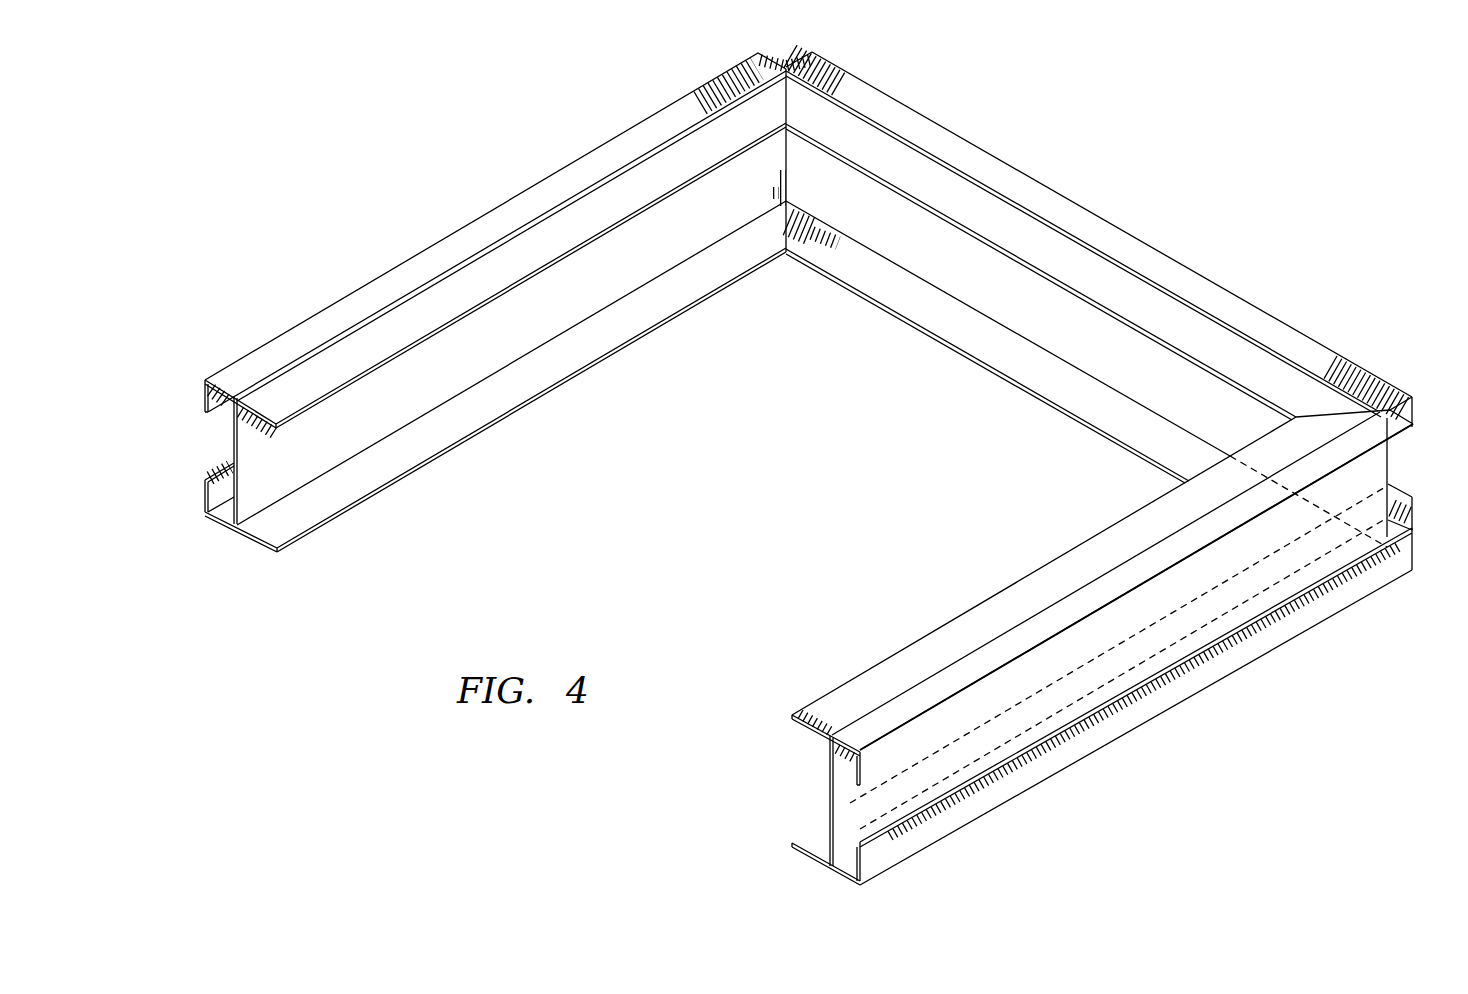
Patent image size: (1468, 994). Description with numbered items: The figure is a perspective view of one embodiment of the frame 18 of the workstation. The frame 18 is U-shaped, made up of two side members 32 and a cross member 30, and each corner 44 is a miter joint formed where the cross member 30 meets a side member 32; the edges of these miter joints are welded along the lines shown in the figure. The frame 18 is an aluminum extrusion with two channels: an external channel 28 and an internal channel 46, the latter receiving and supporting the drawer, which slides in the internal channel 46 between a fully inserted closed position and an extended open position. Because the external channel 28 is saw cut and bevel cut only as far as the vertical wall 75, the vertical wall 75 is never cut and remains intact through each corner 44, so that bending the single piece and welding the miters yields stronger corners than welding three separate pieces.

The frame 18 is at (1207, 168).
The external channel 28 is at (218, 511).
The cross member 30 is at (1043, 314).
The side members 32 is at (218, 442).
The corners 44 is at (786, 104).
The internal channel 46 is at (523, 266).
The vertical wall 75 is at (788, 188).